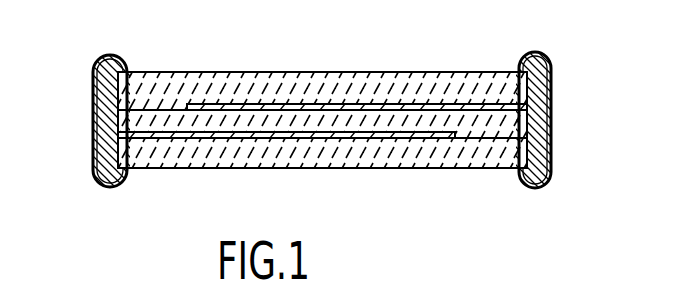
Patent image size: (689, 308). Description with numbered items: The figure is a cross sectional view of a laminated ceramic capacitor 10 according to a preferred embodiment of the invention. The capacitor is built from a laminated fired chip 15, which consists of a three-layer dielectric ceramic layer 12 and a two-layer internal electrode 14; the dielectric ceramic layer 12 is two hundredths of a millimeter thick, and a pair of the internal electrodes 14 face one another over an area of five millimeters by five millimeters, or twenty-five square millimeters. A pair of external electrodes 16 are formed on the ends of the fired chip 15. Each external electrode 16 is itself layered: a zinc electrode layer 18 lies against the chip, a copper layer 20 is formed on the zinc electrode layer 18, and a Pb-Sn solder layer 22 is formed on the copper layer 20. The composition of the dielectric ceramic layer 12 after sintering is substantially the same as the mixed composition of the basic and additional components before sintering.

The laminated ceramic capacitor 10 is at (556, 79).
The dielectric ceramic layer 12 is at (310, 82).
The internal electrode 14 is at (412, 138).
The laminated fired chip 15 is at (403, 63).
The external electrode 16 is at (93, 117).
The zinc electrode layer 18 is at (118, 149).
The copper layer 20 is at (93, 168).
The Pb-Sn solder layer 22 is at (93, 144).